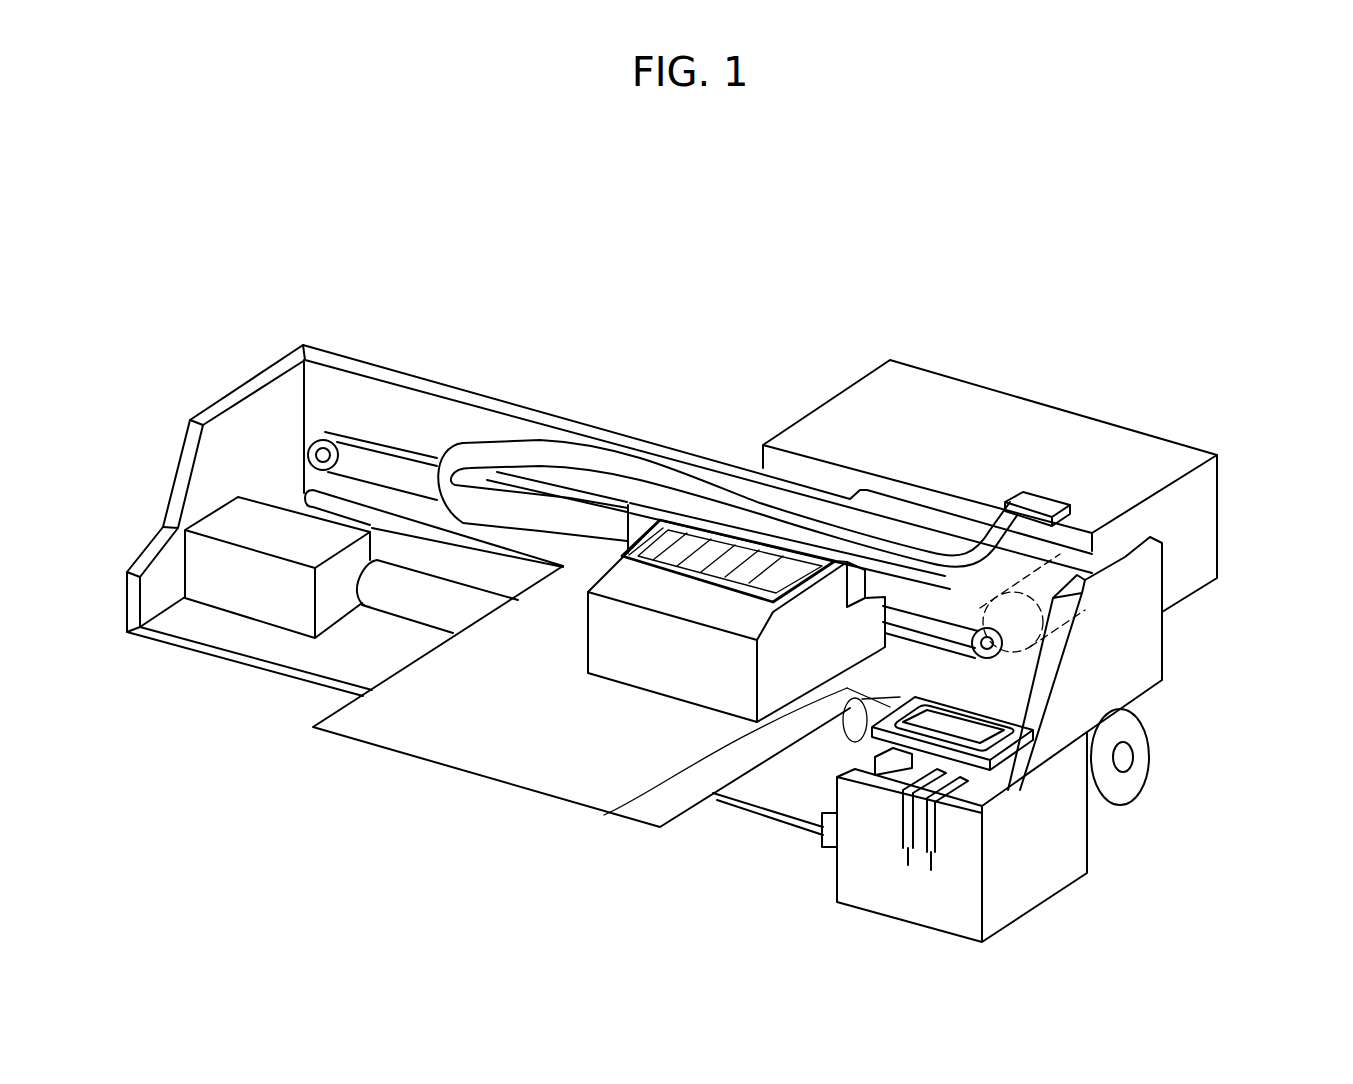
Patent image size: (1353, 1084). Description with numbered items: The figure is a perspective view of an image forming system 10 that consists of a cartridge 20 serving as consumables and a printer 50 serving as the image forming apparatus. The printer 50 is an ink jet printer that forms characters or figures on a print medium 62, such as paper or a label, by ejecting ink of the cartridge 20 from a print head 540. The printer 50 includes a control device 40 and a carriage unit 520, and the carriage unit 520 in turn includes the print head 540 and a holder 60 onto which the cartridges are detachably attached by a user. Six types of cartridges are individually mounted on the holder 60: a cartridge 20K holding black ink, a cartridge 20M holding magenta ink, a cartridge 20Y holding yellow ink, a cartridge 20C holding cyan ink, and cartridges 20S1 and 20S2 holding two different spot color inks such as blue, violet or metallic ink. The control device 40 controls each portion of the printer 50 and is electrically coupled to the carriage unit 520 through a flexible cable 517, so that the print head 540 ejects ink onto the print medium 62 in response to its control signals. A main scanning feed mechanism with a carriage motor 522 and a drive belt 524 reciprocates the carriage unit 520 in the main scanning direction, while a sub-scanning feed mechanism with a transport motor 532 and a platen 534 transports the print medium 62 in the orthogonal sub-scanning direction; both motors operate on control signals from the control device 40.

The image forming system 10 is at (650, 205).
The cartridge 20 is at (937, 275).
The cartridge accumulating cyan ink 20C is at (661, 555).
The cartridge accumulating magenta ink 20M is at (685, 556).
The cartridge accumulating yellow ink 20Y is at (710, 562).
The cartridge accumulating black ink 20K is at (733, 568).
The cartridge accumulating one type of spot color ink 20S1 is at (757, 574).
The cartridge accumulating another type of spot color ink 20S2 is at (780, 580).
The control device 40 is at (1123, 460).
The printer 50 is at (1009, 354).
The holder 60 is at (640, 633).
The print medium 62 is at (445, 743).
The flexible cable 517 is at (593, 473).
The carriage unit 520 is at (387, 832).
The carriage motor 522 is at (1043, 612).
The drive belt 524 is at (387, 452).
The transport motor 532 is at (1150, 722).
The platen 534 is at (403, 598).
The print head 540 is at (847, 688).